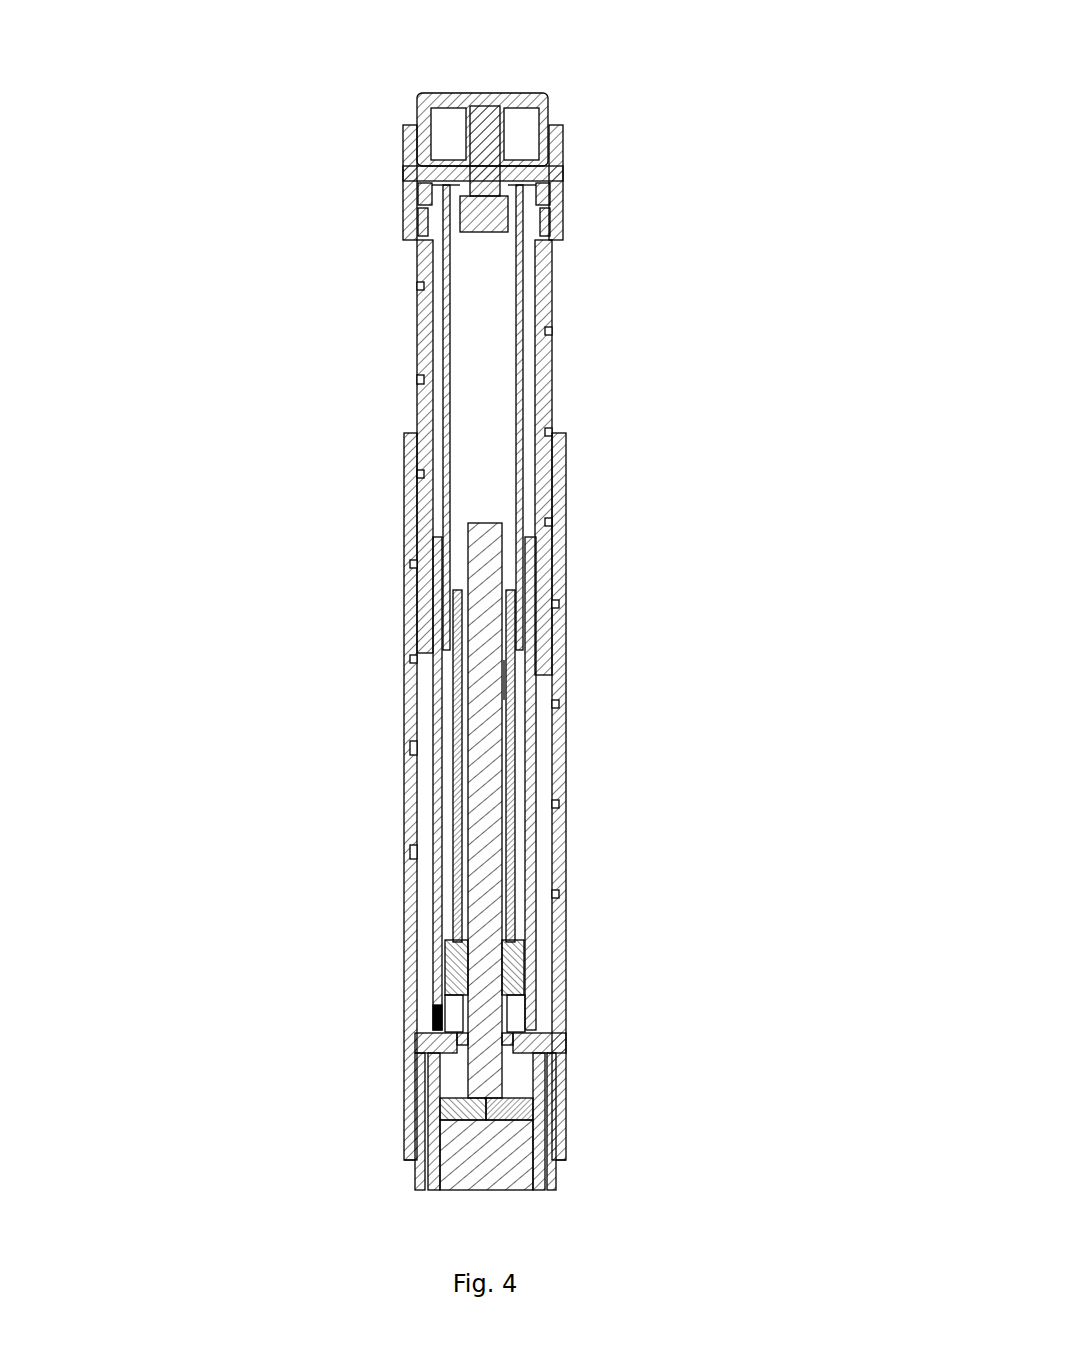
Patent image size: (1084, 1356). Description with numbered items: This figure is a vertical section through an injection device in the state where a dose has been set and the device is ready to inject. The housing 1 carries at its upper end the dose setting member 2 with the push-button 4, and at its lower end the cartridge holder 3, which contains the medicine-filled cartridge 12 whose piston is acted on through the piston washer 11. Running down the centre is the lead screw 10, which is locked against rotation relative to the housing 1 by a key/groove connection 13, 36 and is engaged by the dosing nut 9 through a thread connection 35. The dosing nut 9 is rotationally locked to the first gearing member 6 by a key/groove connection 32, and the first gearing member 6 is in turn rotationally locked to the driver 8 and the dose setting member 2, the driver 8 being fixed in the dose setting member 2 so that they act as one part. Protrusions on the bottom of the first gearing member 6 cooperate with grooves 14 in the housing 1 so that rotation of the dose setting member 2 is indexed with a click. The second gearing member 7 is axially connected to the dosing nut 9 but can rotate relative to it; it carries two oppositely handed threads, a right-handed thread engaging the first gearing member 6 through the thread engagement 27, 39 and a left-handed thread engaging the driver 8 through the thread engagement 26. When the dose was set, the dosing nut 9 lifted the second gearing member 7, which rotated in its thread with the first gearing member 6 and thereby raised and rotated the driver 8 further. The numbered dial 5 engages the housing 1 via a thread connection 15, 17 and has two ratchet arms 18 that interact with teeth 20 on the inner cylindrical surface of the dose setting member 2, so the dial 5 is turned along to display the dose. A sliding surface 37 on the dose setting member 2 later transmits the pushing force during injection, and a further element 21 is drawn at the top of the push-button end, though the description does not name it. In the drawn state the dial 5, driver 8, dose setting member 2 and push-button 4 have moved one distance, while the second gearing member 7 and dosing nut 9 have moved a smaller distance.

The housing 1 is at (387, 796).
The dose setting member 2 is at (547, 163).
The cartridge holder 3 is at (497, 1092).
The push-button 4 is at (467, 85).
The dial 5 is at (548, 273).
The first gearing member 6 is at (497, 762).
The second gearing member 7 is at (494, 828).
The driver 8 is at (527, 313).
The dosing nut 9 is at (522, 970).
The lead screw 10 is at (490, 613).
The piston washer 11 is at (508, 1110).
The cartridge 12 is at (540, 1152).
The key/groove connection 13 is at (530, 1038).
The grooves 14 is at (430, 1018).
The thread connection 15 is at (418, 748).
The thread connection 17 is at (420, 380).
The ratchet arms 18 is at (412, 194).
The teeth 20 is at (413, 222).
The cap top 21 is at (545, 106).
The thread engagement 26 is at (455, 700).
The thread engagement 27 is at (515, 793).
The key/groove connection 32 is at (445, 1022).
The thread connection 35 is at (455, 963).
The key/groove connection 36 is at (505, 683).
The sliding surface 37 is at (530, 181).
The thread engagement 39 is at (425, 852).